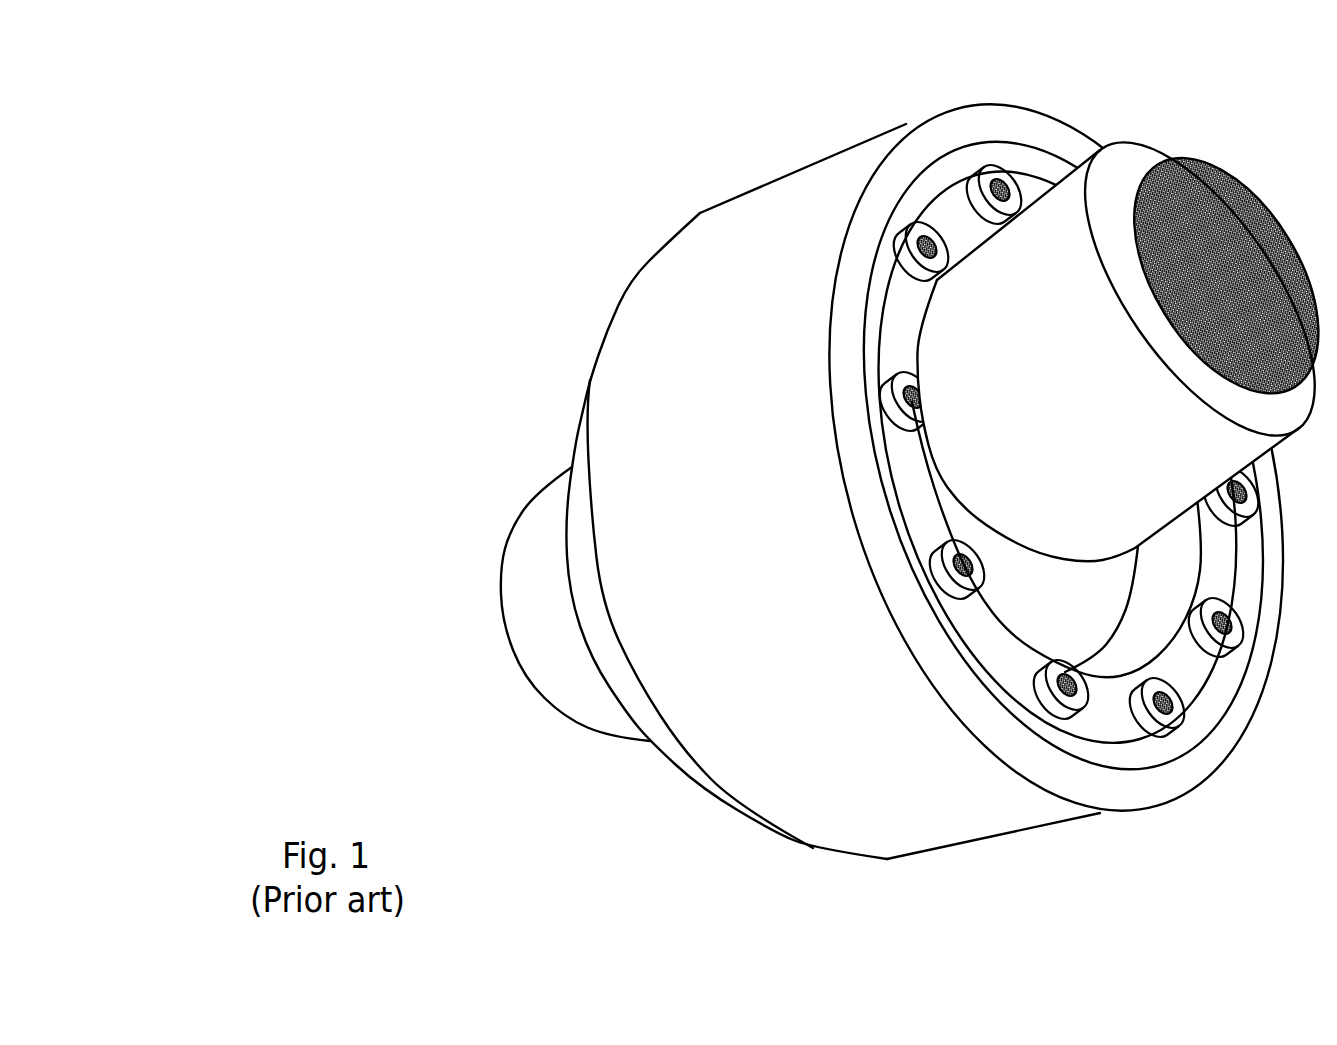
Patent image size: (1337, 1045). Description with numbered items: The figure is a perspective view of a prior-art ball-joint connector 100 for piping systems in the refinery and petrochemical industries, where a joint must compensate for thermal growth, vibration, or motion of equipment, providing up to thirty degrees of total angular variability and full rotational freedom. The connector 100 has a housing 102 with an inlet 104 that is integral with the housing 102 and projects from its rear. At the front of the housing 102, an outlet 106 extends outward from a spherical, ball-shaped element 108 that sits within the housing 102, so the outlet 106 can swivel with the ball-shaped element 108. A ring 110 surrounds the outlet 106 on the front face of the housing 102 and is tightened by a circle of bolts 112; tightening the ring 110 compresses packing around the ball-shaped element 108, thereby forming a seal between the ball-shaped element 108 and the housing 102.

The ball-joint connector 100 is at (760, 185).
The housing 102 is at (738, 328).
The inlet 104 is at (569, 467).
The outlet 106 is at (1096, 374).
The ball-shaped element 108 is at (1078, 612).
The ring 110 is at (950, 207).
The bolts 112 is at (998, 170).